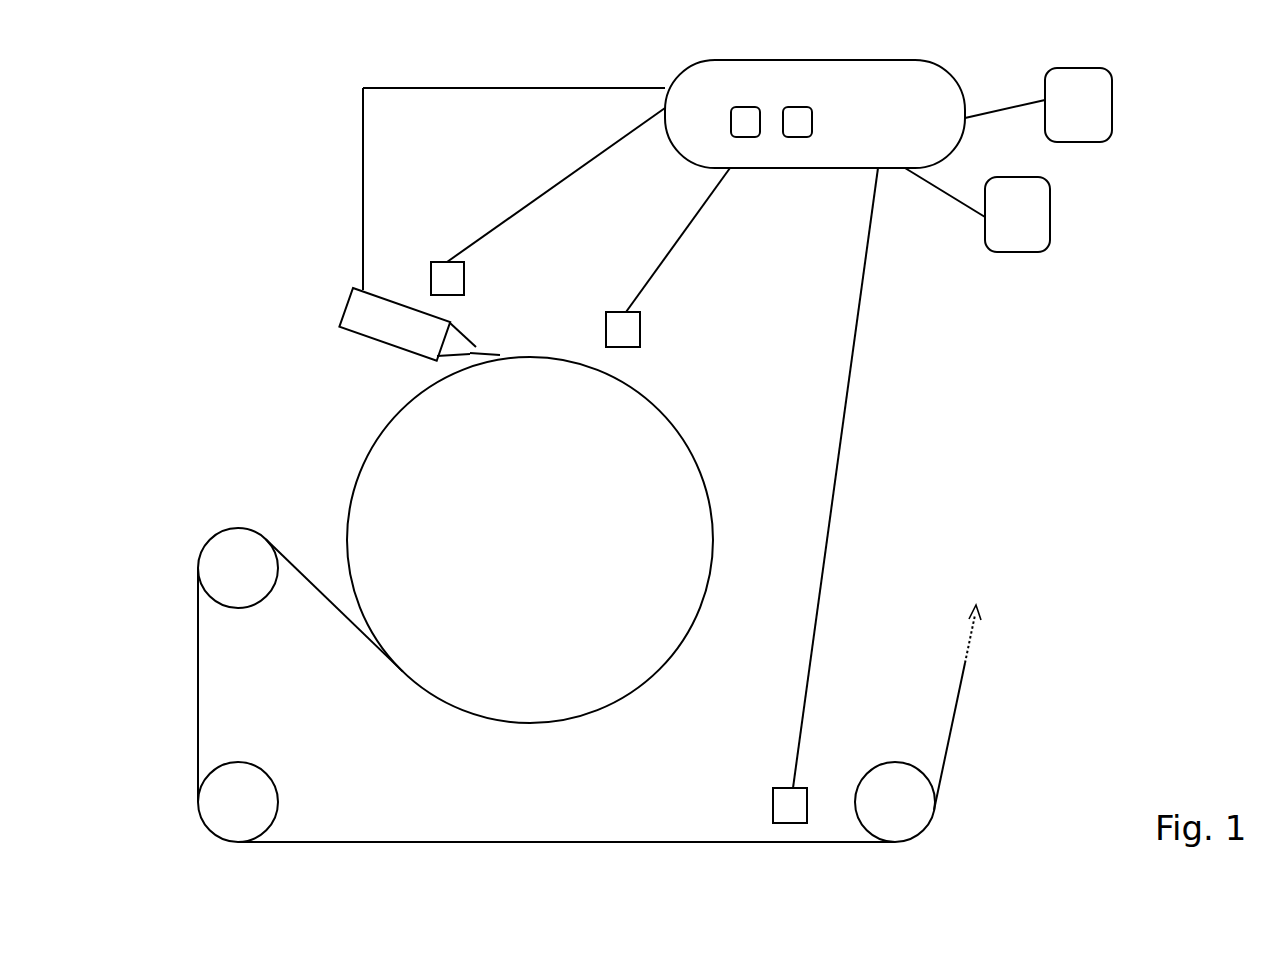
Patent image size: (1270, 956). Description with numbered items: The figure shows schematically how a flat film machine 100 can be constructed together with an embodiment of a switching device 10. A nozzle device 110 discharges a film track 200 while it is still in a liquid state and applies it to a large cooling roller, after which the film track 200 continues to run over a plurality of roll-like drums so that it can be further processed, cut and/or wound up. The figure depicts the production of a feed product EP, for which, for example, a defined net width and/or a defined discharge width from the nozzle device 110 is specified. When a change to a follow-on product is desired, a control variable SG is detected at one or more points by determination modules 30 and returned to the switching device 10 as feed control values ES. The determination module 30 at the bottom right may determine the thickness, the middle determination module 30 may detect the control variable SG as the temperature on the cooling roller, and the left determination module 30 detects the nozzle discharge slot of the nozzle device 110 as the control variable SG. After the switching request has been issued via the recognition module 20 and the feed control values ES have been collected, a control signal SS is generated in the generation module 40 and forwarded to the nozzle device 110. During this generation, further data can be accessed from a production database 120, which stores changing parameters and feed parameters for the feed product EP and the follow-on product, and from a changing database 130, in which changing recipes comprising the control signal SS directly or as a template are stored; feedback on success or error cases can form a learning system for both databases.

The switching device 10 is at (965, 88).
The recognition module 20 is at (748, 112).
The generation module 40 is at (803, 113).
The determination module 30 is at (631, 503).
The flat film machine 100 is at (543, 543).
The nozzle device 110 is at (367, 337).
The production database 120 is at (1022, 233).
The changing database 130 is at (1090, 107).
The film track 200 is at (493, 352).
The control signal SS is at (407, 88).
The feed control value ES is at (553, 188).
The control variable SG is at (782, 808).
The feed product EP is at (996, 497).